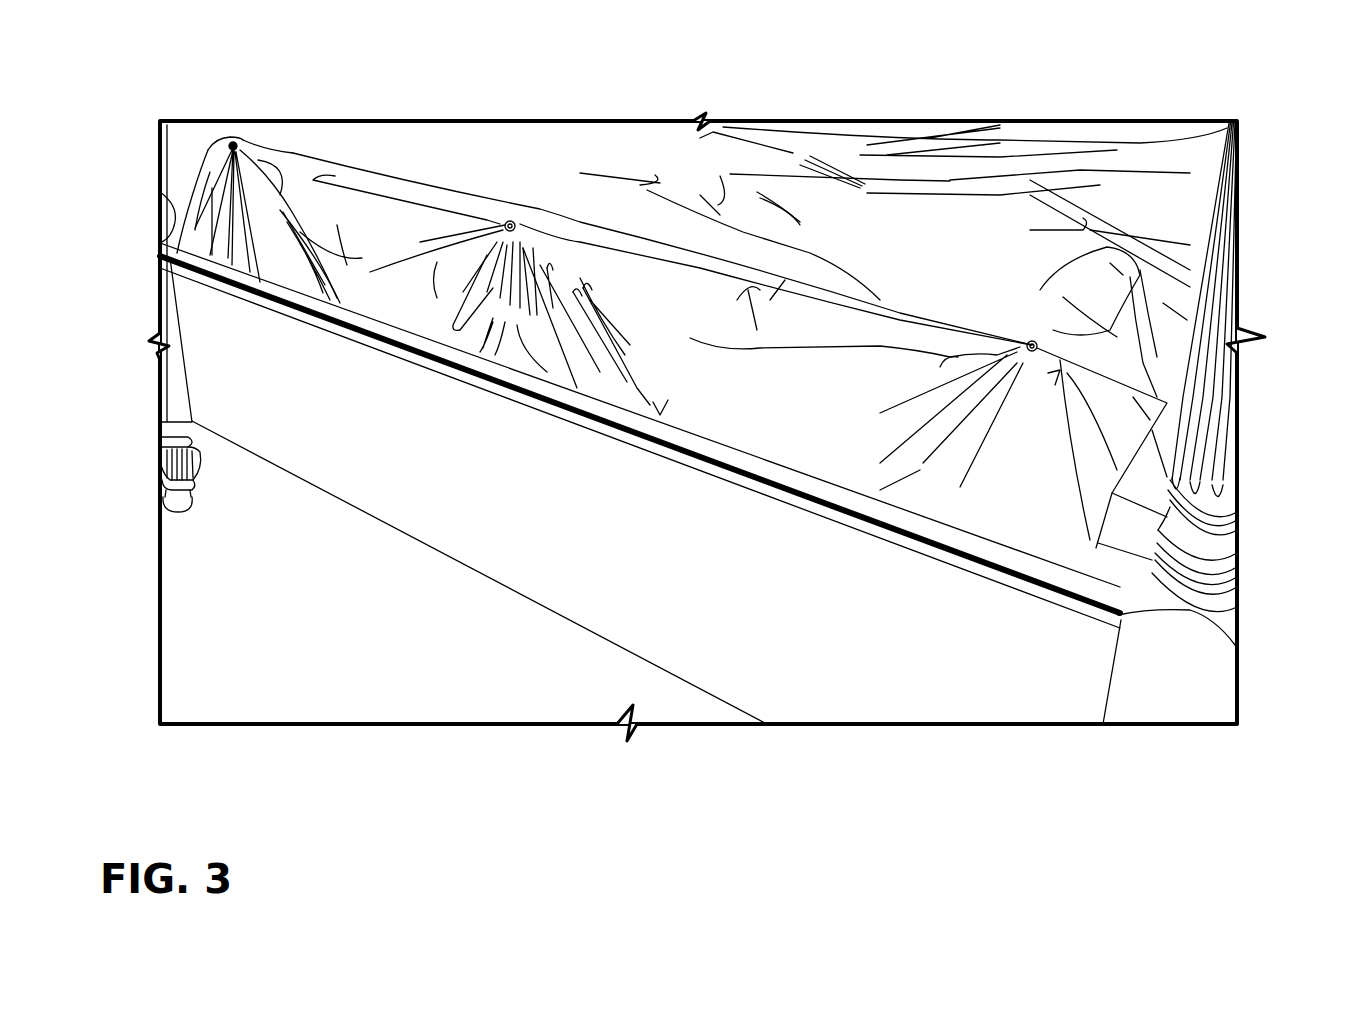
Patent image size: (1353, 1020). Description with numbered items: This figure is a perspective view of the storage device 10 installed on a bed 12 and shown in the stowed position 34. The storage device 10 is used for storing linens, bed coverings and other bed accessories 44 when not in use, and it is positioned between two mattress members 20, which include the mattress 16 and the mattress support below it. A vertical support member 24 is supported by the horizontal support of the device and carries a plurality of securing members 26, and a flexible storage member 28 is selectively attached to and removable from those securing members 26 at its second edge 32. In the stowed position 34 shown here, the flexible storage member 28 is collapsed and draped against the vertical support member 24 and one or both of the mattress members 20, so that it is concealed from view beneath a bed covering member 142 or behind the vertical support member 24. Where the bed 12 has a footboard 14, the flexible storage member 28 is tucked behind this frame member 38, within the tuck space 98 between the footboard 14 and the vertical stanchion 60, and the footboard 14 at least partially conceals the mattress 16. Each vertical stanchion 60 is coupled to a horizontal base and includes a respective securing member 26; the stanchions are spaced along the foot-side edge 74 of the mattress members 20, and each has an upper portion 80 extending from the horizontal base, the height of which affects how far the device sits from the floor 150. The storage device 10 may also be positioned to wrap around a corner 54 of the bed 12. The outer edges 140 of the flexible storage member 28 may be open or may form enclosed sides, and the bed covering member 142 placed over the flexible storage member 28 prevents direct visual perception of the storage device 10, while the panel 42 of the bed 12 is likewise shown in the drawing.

The storage device 10 is at (378, 162).
The bed 12 is at (1121, 103).
The footboard 14 is at (218, 388).
The mattress 16 is at (570, 212).
The mattress members 20 is at (1192, 258).
The vertical support member 24 is at (1017, 450).
The securing members 26 is at (1073, 227).
The flexible storage member 28 is at (283, 206).
The second edge 32 is at (486, 221).
The stowed position 34 is at (743, 231).
The frame member 38 is at (257, 458).
The panel face 42 is at (383, 460).
The bed accessories 44 is at (1010, 141).
The corner 54 is at (1138, 568).
The vertical stanchion 60 is at (197, 168).
The foot-side edge 74 is at (855, 296).
The upper portion 80 is at (1037, 383).
The tuck space 98 is at (277, 277).
The outer edges 140 is at (200, 186).
The bed covering member 142 is at (1040, 340).
The floor 150 is at (283, 683).